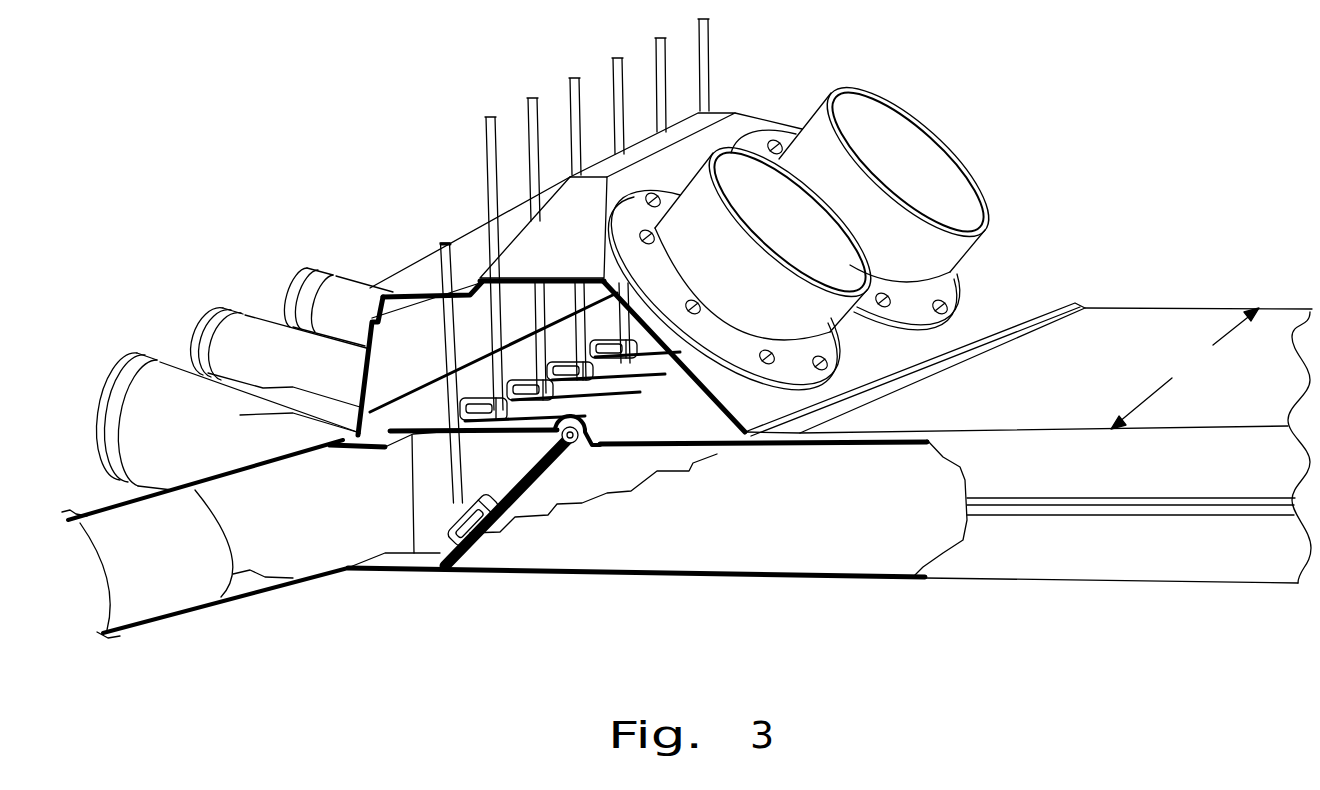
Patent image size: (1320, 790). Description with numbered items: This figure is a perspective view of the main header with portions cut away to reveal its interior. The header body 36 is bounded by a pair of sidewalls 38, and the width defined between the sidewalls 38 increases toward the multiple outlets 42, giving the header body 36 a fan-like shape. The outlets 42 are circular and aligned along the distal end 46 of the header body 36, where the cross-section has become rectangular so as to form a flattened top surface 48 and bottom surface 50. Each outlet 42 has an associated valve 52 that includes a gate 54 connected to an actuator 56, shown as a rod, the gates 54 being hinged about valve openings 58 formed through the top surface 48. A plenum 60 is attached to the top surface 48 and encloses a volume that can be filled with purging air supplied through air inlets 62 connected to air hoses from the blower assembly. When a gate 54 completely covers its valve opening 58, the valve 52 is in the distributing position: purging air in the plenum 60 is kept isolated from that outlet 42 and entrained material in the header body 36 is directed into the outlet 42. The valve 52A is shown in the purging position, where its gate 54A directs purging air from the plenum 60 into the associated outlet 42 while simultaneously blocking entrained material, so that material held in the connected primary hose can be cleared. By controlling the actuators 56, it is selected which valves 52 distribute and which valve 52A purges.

The header body 36 is at (1181, 307).
The sidewalls 38 is at (1070, 486).
The outlets 42 is at (303, 293).
The distal end 46 is at (430, 420).
The top surface 48 is at (1077, 373).
The bottom surface 50 is at (1046, 583).
The valve 52 is at (577, 415).
The valve in purging position 52A is at (531, 473).
The gate 54 is at (605, 290).
The gate of purging valve 54A is at (490, 530).
The actuator 56 is at (503, 403).
The valve openings 58 is at (507, 440).
The plenum 60 is at (995, 280).
The air inlets 62 is at (937, 162).